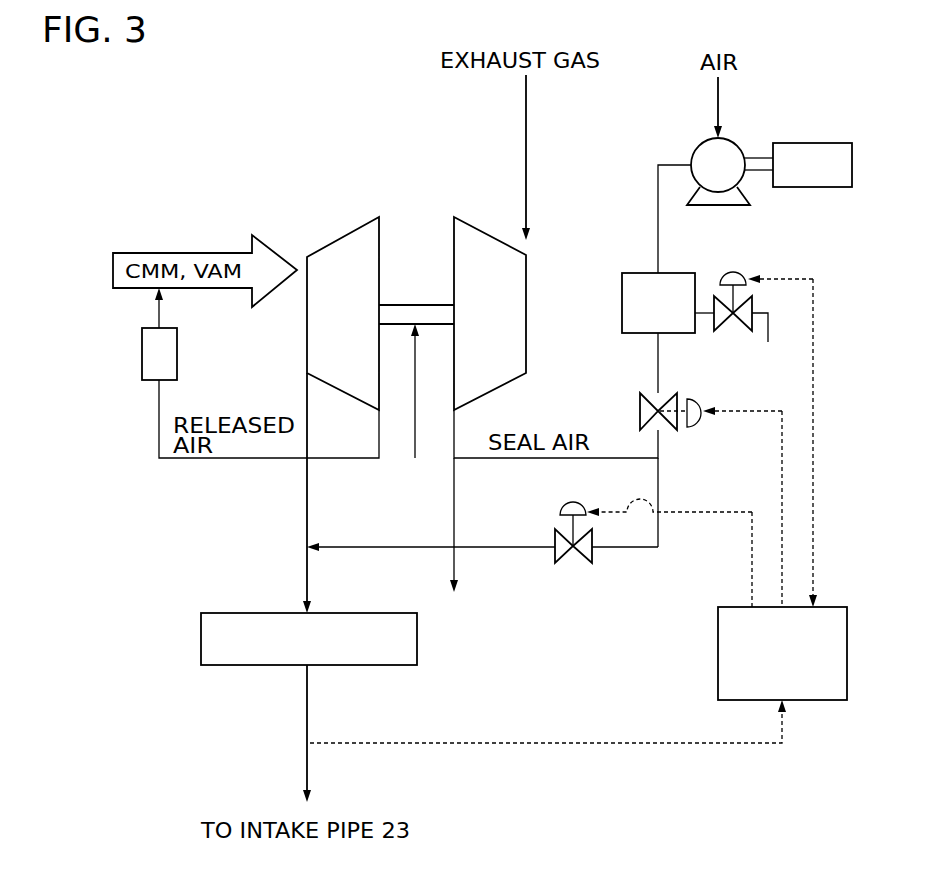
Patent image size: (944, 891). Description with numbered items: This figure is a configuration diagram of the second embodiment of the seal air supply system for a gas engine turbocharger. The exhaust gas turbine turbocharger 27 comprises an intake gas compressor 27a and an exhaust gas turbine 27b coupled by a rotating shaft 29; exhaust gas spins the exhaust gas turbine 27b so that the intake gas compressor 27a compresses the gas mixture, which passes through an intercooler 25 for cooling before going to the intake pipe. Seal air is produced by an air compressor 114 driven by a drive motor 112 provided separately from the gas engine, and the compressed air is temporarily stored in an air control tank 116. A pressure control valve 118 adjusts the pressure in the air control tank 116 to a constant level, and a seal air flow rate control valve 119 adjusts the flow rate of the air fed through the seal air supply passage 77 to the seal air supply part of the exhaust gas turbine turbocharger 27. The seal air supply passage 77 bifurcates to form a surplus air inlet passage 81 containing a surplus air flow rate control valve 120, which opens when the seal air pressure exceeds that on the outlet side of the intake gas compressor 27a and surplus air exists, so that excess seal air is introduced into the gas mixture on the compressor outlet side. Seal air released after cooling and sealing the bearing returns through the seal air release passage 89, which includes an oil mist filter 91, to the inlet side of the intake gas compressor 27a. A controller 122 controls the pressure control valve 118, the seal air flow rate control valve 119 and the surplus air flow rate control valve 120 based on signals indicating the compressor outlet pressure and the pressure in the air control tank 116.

The exhaust gas turbine turbocharger 27 is at (413, 207).
The intake gas compressor 27a is at (337, 390).
The exhaust gas turbine 27b is at (494, 393).
The rotating shaft 29 is at (415, 302).
The intercooler 25 is at (420, 641).
The seal air release passage 89 is at (344, 460).
The oil mist filter 91 is at (142, 357).
The seal air supply passage 77 is at (621, 458).
The surplus air inlet passage 81 is at (522, 548).
The drive motor 112 is at (810, 143).
The air compressor 114 is at (692, 153).
The air control tank 116 is at (622, 297).
The pressure control valve 118 is at (735, 272).
The seal air flow rate control valve 119 is at (672, 393).
The surplus air flow rate control valve 120 is at (594, 560).
The controller 122 is at (828, 607).